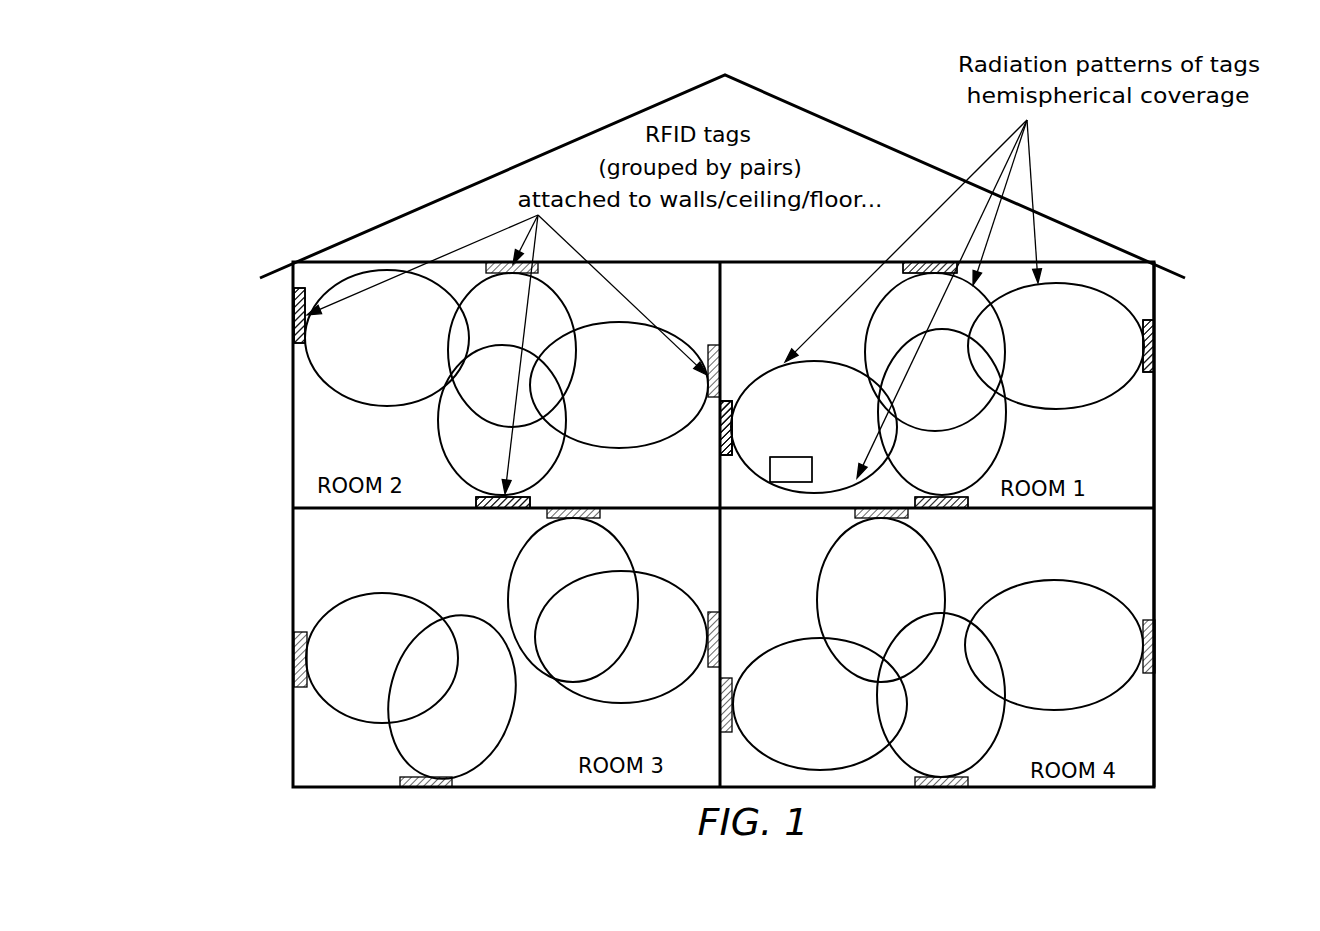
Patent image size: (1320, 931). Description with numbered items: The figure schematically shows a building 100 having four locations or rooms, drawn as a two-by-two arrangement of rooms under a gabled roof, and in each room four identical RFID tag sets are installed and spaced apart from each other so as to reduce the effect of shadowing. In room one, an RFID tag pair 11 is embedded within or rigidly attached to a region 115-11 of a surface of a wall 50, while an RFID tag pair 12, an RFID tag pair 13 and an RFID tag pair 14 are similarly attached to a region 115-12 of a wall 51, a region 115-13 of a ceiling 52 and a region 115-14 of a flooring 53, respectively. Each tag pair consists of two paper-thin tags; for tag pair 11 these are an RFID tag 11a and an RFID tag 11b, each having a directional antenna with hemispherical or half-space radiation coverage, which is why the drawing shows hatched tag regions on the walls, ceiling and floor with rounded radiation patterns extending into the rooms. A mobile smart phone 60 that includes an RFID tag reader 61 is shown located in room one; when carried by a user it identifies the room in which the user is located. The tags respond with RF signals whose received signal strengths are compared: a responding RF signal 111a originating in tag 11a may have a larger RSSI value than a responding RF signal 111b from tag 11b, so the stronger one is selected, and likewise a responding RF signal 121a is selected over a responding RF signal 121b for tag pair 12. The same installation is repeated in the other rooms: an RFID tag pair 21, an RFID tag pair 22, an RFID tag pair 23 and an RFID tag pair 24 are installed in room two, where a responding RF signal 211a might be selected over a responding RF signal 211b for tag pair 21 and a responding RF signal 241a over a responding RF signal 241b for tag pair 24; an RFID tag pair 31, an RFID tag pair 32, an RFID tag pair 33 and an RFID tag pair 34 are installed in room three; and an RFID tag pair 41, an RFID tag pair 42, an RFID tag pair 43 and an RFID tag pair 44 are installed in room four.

The building 100 is at (1290, 530).
The wall 50 is at (714, 290).
The wall 51 is at (1158, 295).
The ceiling 52 is at (1100, 262).
The flooring 53 is at (1125, 508).
The RFID tag pair 11 is at (814, 427).
The responding RF signal 111a is at (726, 428).
The responding RF signal 111b is at (726, 428).
The RFID tag 11a is at (726, 428).
The RFID tag 11b is at (726, 428).
The RFID tag pair 12 is at (1056, 346).
The responding RF signal 121a is at (1148, 346).
The responding RF signal 121b is at (1148, 346).
The RFID tag pair 13 is at (920, 275).
The RFID tag pair 14 is at (945, 495).
The region 115-11 is at (720, 428).
The region 115-12 is at (1153, 350).
The region 115-13 is at (900, 262).
The region 115-14 is at (942, 508).
The mobile smart phone 60 is at (790, 482).
The RFID tag reader 61 is at (791, 469).
The RFID tag pair 21 is at (305, 320).
The responding RF signal 211a is at (293, 323).
The responding RF signal 211b is at (299, 315).
The RFID tag pair 22 is at (707, 375).
The RFID tag pair 23 is at (505, 275).
The RFID tag pair 24 is at (500, 495).
The responding RF signal 241a is at (483, 508).
The responding RF signal 241b is at (503, 502).
The RFID tag pair 31 is at (307, 660).
The RFID tag pair 32 is at (708, 635).
The RFID tag pair 33 is at (568, 520).
The RFID tag pair 34 is at (430, 777).
The RFID tag pair 41 is at (733, 705).
The RFID tag pair 42 is at (1143, 645).
The RFID tag pair 43 is at (880, 520).
The RFID tag pair 44 is at (942, 777).